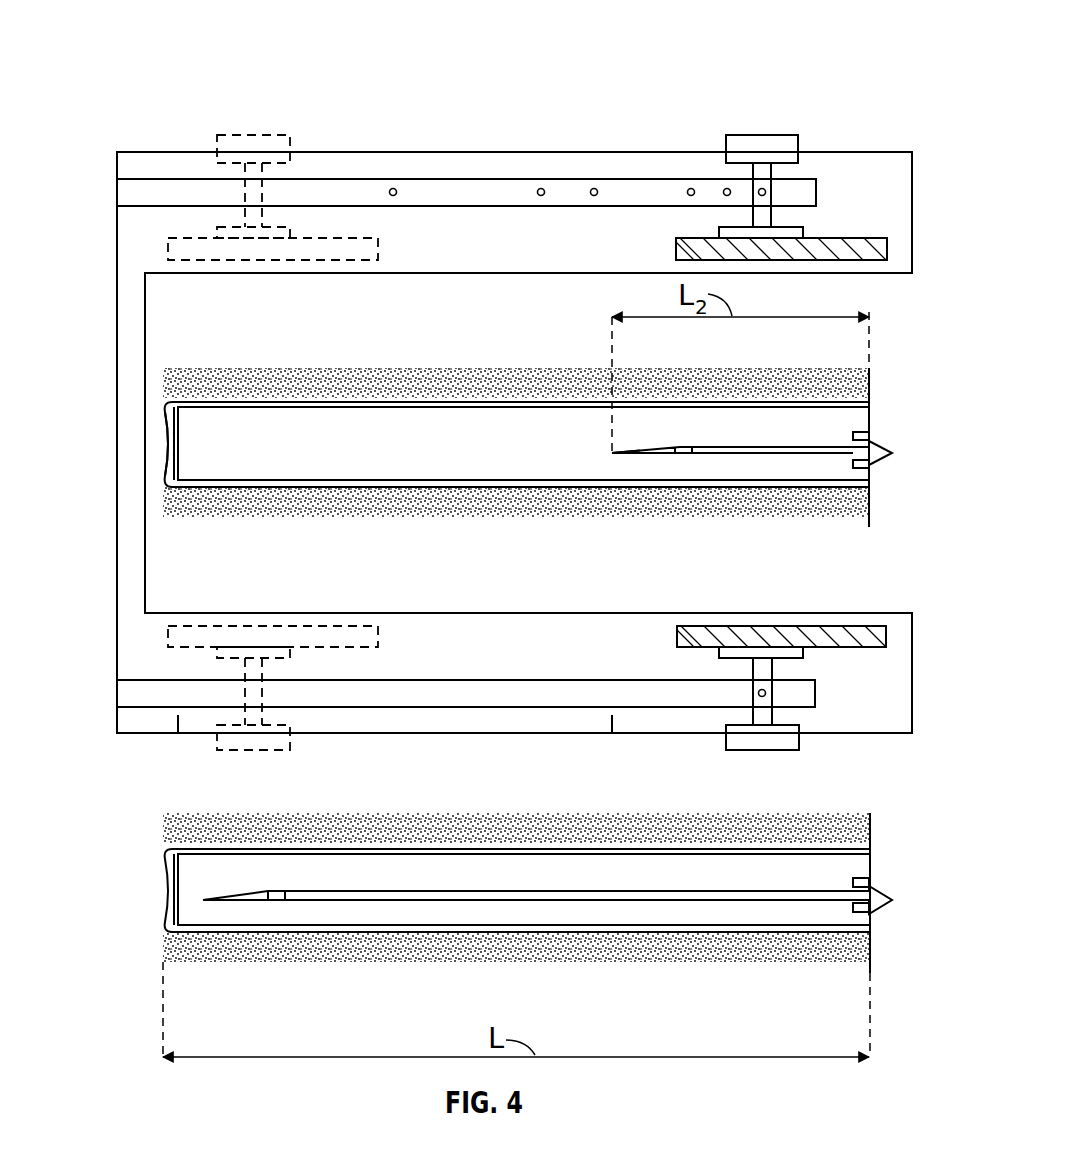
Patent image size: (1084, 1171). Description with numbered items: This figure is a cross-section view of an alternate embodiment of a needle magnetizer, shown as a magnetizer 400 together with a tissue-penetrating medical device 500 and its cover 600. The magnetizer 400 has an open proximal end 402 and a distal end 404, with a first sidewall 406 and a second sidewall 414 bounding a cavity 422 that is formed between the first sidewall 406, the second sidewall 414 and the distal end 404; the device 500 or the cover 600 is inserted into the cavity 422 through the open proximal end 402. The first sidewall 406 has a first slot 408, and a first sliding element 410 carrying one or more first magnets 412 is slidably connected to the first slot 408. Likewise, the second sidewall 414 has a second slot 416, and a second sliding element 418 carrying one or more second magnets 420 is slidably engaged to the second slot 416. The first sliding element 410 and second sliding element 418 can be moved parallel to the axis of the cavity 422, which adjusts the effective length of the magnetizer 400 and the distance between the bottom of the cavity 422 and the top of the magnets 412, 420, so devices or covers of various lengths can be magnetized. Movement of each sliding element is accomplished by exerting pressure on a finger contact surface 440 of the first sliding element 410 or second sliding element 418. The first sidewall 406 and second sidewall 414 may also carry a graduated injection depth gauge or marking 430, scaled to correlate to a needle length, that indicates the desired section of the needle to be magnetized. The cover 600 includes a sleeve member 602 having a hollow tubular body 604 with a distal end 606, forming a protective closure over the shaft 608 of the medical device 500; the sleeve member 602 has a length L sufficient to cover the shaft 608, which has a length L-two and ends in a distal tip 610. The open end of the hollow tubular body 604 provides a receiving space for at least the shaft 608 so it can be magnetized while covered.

The magnetizer 400 is at (162, 55).
The open proximal end 402 is at (858, 556).
The distal end 404 is at (128, 583).
The first sidewall 406 is at (432, 163).
The first slot 408 is at (573, 188).
The first sliding element 410 is at (778, 167).
The first magnets 412 is at (851, 255).
The second sidewall 414 is at (380, 724).
The second slot 416 is at (505, 690).
The second sliding element 418 is at (775, 715).
The second magnets 420 is at (870, 630).
The cavity 422 is at (165, 300).
The graduated injection depth gauge or marking 430 is at (172, 722).
The finger contact surface 440 is at (762, 135).
The tissue-penetrating medical device 500 is at (812, 447).
The cover 600 is at (190, 497).
The sleeve member 602 is at (465, 480).
The hollow tubular body 604 is at (320, 460).
The distal end 606 is at (175, 395).
The shaft 608 is at (682, 447).
The distal tip 610 is at (632, 448).